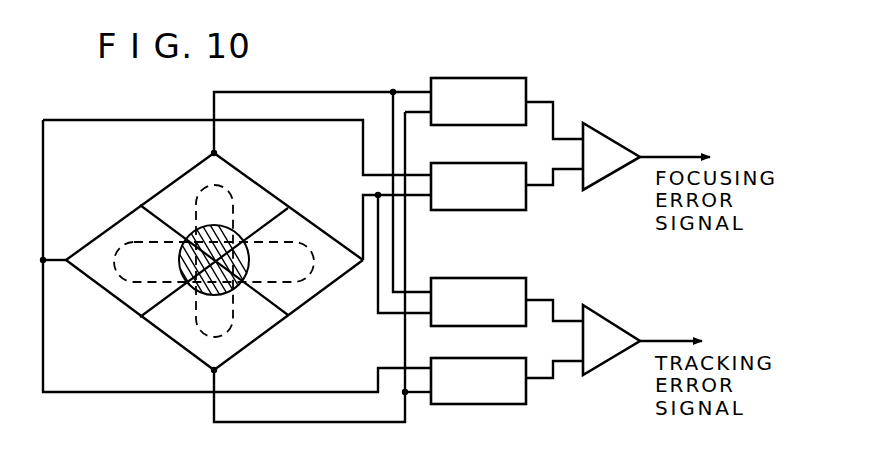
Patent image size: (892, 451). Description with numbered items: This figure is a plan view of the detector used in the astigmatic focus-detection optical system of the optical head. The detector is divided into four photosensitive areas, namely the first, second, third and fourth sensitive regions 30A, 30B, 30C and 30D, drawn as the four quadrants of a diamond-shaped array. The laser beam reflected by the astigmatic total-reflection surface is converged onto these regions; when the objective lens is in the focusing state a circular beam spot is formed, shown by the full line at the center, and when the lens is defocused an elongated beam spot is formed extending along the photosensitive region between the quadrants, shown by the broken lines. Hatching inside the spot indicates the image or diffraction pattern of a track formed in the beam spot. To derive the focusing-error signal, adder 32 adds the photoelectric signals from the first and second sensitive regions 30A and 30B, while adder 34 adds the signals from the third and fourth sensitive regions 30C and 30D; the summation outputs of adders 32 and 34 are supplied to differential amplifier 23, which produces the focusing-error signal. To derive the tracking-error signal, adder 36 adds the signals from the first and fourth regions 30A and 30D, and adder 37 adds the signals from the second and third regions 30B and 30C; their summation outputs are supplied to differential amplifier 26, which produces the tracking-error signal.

The first sensitive region 30A is at (255, 192).
The second sensitive region 30B is at (238, 345).
The third sensitive region 30C is at (107, 285).
The fourth sensitive region 30D is at (315, 292).
The adder 32 is at (527, 81).
The adder 34 is at (515, 204).
The adder 36 is at (468, 283).
The adder 37 is at (488, 402).
The differential amplifier 23 is at (605, 146).
The differential amplifier 26 is at (607, 322).